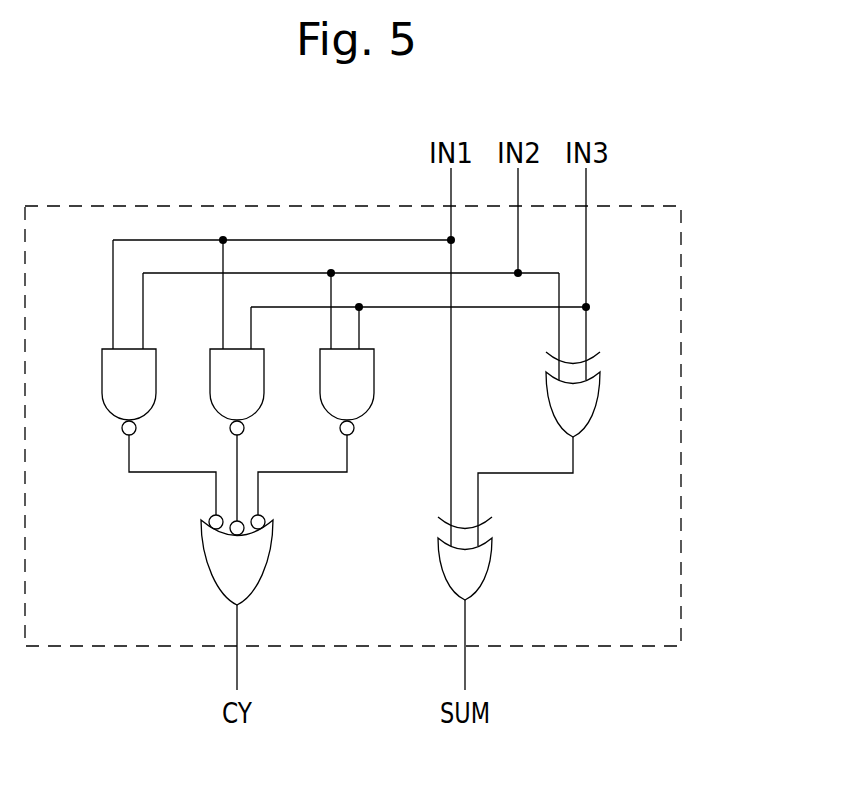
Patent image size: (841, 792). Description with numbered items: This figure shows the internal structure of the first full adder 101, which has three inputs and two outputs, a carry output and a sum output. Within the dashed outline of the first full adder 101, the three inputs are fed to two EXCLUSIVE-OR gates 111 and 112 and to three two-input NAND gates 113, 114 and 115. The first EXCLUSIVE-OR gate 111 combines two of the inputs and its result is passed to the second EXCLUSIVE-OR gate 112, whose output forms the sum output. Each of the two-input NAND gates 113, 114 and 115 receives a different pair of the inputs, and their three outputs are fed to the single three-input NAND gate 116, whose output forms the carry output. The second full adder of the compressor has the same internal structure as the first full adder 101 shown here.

The first full adder 101 is at (682, 605).
The EXCLUSIVE-OR gate 111 is at (592, 405).
The EXCLUSIVE-OR gate 112 is at (485, 568).
The 2-input NAND gate 113 is at (142, 418).
The 2-input NAND gate 114 is at (250, 418).
The 2-input NAND gate 115 is at (360, 418).
The 3-input NAND gate 116 is at (262, 575).